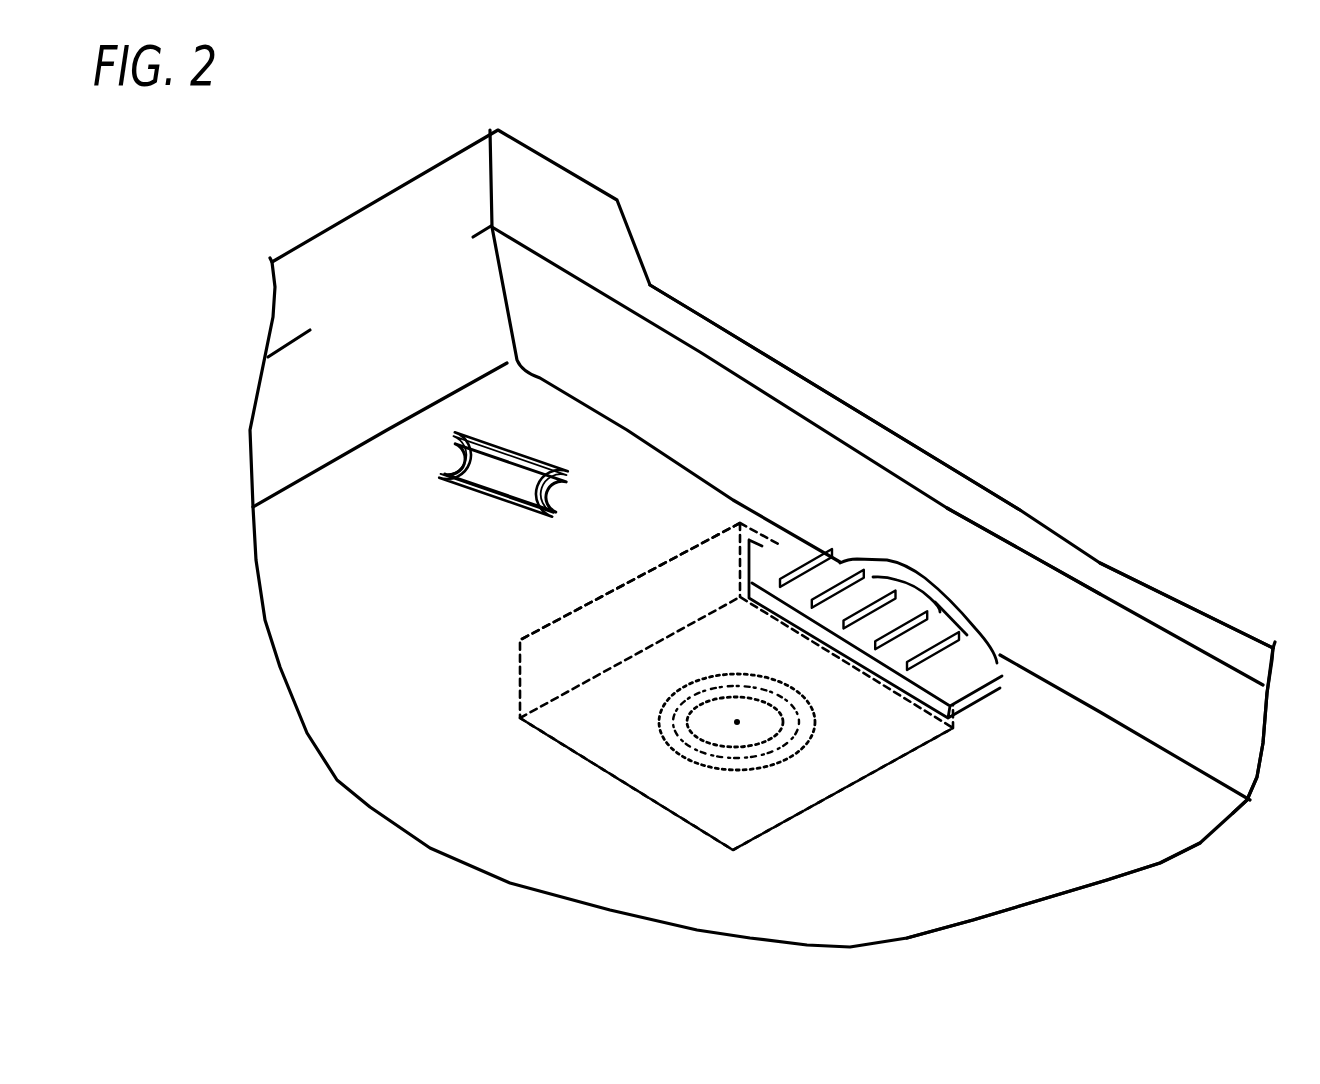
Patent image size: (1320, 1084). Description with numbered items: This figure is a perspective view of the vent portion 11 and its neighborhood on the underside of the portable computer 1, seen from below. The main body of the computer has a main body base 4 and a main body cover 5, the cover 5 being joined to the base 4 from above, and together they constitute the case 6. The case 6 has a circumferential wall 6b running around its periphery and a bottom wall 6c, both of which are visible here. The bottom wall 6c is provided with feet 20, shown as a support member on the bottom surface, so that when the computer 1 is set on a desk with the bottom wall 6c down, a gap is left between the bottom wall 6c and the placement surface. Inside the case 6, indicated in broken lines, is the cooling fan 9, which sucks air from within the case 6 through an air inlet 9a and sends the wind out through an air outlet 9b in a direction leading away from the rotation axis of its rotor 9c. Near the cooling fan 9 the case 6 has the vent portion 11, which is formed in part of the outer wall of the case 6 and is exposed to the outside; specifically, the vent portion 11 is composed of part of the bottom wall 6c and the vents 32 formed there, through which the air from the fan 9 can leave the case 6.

The portable computer 1 is at (1080, 200).
The main body base 4 is at (1233, 762).
The main body cover 5 is at (1195, 623).
The case 6 is at (703, 318).
The circumferential wall 6b is at (1083, 610).
The bottom wall 6c is at (1153, 860).
The cooling fan 9 is at (612, 785).
The air inlet 9a is at (773, 775).
The air outlet 9b is at (735, 571).
The rotor 9c is at (745, 723).
The vent portion 11 is at (950, 515).
The feet 20 is at (495, 490).
The vents 32 is at (918, 606).